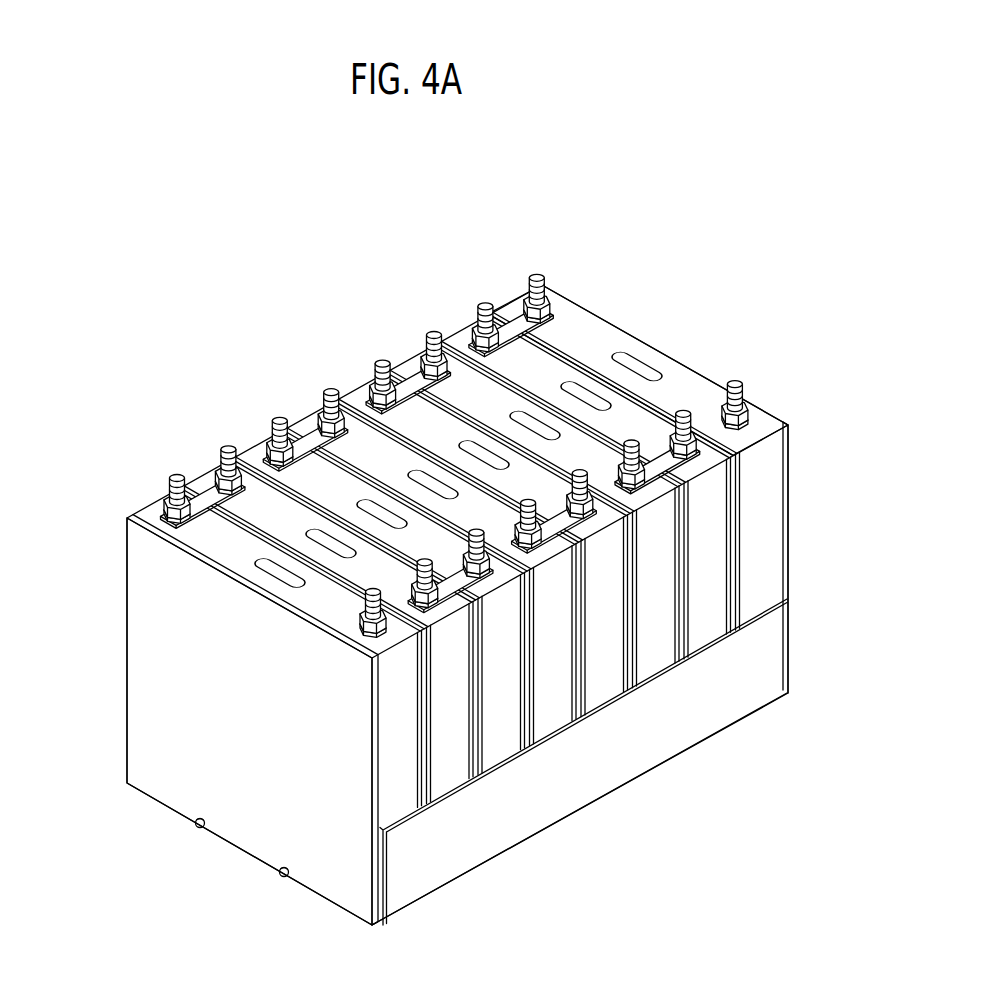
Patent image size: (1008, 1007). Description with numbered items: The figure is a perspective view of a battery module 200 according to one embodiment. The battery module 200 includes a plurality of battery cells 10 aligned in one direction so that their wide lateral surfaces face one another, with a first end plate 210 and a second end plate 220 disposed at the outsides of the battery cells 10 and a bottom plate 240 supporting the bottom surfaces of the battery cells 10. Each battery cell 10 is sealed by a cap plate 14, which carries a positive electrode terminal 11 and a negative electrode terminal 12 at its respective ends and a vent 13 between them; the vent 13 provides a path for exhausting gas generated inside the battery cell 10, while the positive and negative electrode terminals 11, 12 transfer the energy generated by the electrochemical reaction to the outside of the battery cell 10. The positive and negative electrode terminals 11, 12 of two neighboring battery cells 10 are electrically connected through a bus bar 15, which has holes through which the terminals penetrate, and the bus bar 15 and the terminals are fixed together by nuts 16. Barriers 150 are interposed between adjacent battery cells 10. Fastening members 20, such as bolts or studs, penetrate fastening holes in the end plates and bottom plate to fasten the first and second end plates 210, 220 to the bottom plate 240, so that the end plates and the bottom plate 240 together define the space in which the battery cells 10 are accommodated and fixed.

The battery module 200 is at (238, 251).
The battery cell 10 is at (711, 592).
The positive electrode terminal 11 is at (541, 270).
The negative electrode terminal 12 is at (737, 390).
The vent 13 is at (641, 366).
The cap plate 14 is at (594, 330).
The bus bar 15 is at (210, 490).
The nut 16 is at (268, 424).
The fastening member 20 is at (200, 829).
The barrier 150 is at (642, 645).
The first end plate 210 is at (155, 727).
The second end plate 220 is at (800, 525).
The bottom plate 240 is at (444, 899).